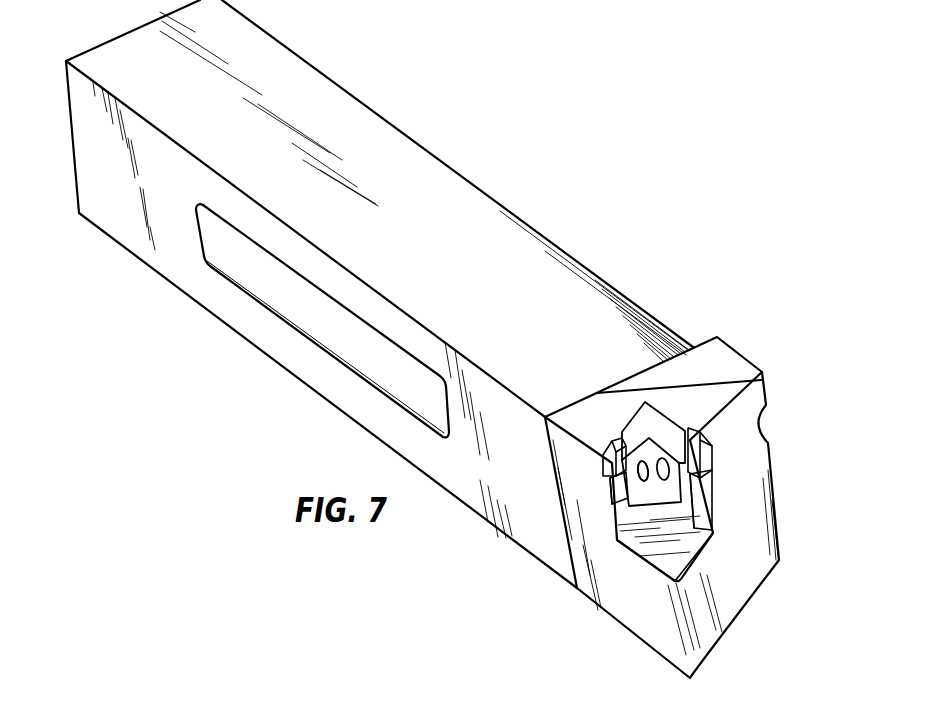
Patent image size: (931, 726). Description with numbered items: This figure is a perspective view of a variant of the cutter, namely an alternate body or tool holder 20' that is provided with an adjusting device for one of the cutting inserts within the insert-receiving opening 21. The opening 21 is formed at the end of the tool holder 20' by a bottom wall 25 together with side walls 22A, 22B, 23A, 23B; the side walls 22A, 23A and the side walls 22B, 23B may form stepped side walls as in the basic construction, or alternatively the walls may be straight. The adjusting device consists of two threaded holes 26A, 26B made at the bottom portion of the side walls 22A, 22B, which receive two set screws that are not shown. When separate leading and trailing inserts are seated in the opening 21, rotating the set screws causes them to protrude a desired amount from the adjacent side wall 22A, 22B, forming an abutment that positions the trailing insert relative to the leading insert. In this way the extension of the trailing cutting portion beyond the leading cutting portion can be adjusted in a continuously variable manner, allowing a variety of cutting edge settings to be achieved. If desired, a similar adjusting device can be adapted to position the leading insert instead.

The tool holder 20' is at (422, 339).
The opening 21 is at (657, 486).
The side wall 22A is at (712, 518).
The side wall 22B is at (628, 500).
The side wall 23A is at (712, 470).
The side wall 23B is at (636, 432).
The bottom wall 25 is at (678, 551).
The threaded hole 26A is at (661, 551).
The threaded hole 26B is at (640, 473).